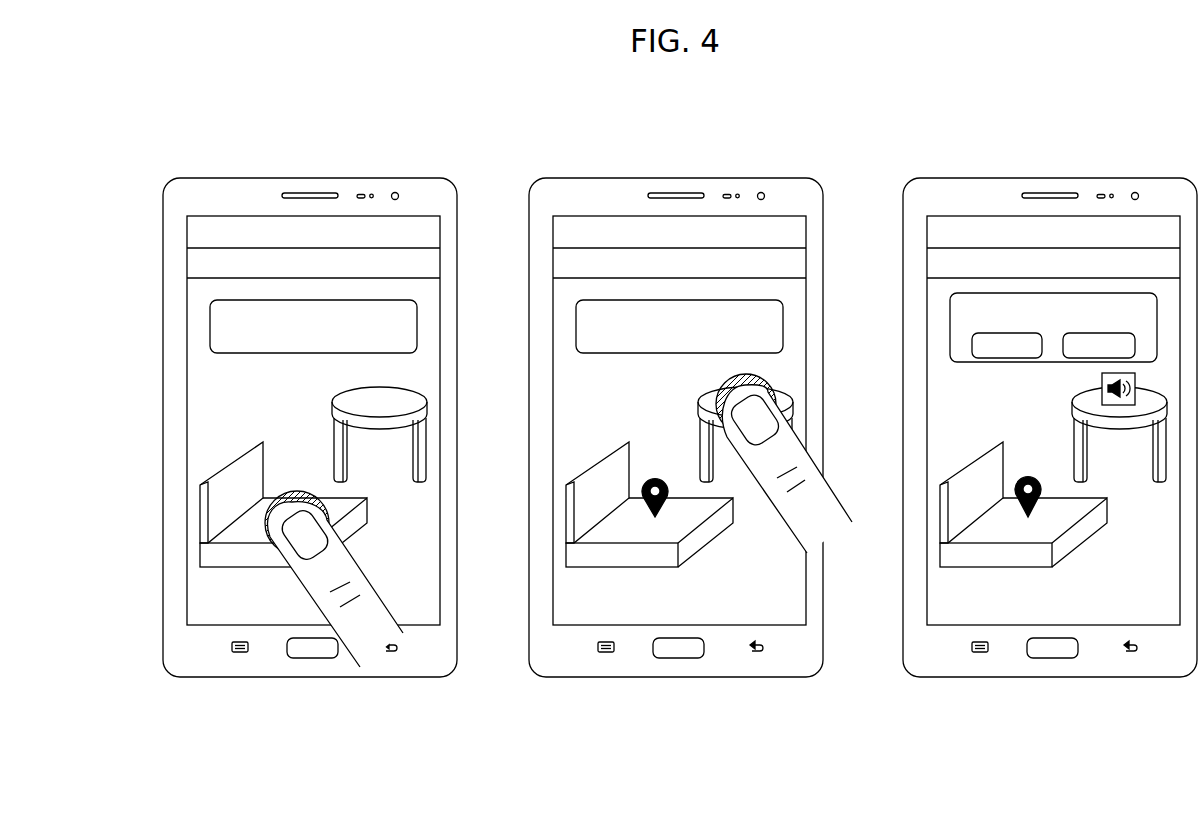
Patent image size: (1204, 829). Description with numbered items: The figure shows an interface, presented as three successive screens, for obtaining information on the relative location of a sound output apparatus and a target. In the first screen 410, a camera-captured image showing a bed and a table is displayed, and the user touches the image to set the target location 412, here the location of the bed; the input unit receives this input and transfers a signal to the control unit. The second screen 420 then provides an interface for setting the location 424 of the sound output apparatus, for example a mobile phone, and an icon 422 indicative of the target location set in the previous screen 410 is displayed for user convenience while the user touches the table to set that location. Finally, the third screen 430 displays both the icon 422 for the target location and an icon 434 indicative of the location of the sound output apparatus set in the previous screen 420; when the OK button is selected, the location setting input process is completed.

The first screen 410 is at (281, 414).
The target location 412 is at (268, 510).
The second screen 420 is at (665, 414).
The icon indicative of the target location 422 is at (649, 518).
The location of the sound output apparatus 424 is at (714, 402).
The third screen 430 is at (1050, 445).
The icon indicative of the location of the sound output apparatus 434 is at (1120, 405).